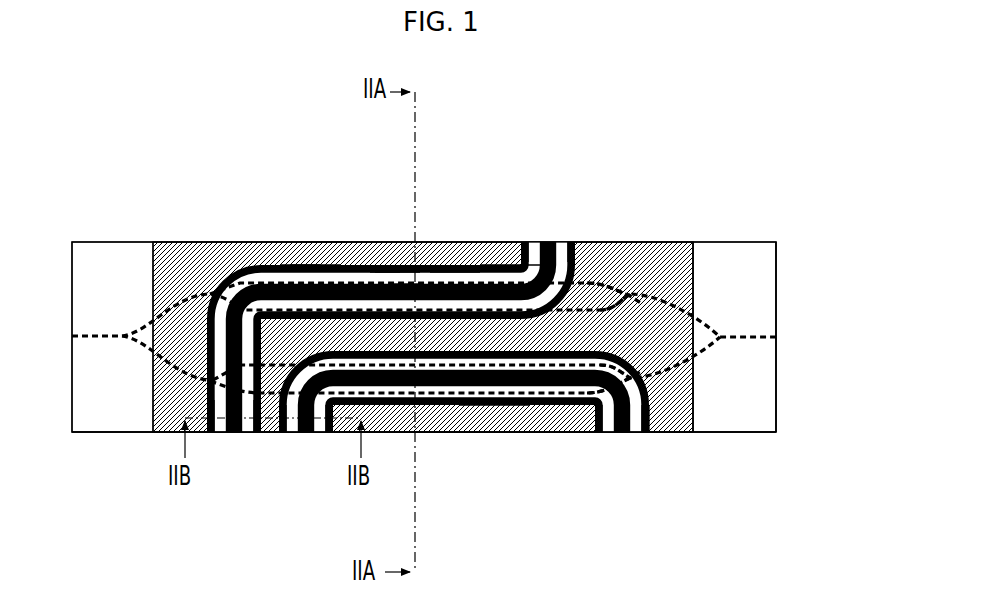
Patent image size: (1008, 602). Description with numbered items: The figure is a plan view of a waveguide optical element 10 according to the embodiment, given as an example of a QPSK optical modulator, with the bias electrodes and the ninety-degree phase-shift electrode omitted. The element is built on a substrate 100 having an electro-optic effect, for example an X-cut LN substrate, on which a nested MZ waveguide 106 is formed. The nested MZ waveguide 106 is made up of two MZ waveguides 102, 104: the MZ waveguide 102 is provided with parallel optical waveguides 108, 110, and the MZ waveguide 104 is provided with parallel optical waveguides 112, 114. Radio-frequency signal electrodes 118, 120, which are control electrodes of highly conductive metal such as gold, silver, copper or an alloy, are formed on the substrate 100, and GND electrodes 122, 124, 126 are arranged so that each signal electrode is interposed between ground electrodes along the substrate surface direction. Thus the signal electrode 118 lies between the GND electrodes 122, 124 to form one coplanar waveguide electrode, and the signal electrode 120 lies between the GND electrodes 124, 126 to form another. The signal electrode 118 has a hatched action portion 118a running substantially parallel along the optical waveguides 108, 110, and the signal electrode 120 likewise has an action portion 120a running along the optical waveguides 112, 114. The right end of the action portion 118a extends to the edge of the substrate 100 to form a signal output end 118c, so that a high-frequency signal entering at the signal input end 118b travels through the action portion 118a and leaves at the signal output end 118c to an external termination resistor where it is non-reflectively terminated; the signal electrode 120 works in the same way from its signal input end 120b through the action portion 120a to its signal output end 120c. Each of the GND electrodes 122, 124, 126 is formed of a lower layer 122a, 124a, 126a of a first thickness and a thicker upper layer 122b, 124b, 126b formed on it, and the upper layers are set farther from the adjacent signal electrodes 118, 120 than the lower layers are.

The waveguide optical element 10 is at (150, 146).
The substrate 100 is at (757, 242).
The MZ waveguide 102 is at (655, 305).
The MZ waveguide 104 is at (700, 425).
The nested MZ waveguide 106 is at (747, 339).
The optical waveguide 108 is at (593, 282).
The optical waveguide 110 is at (610, 300).
The optical waveguide 112 is at (565, 400).
The optical waveguide 114 is at (540, 405).
The signal electrode 118 is at (530, 262).
The action portion 118a is at (460, 278).
The signal input end 118b is at (236, 425).
The signal output end 118c is at (555, 265).
The signal electrode 120 is at (610, 415).
The action portion 120a is at (490, 415).
The signal input end 120b is at (303, 425).
The signal output end 120c is at (630, 420).
The GND electrode 122 is at (232, 143).
The lower layer 122a is at (305, 268).
The upper layer 122b is at (323, 250).
The GND electrode 124 is at (527, 543).
The lower layer 124a is at (458, 422).
The upper layer 124b is at (428, 420).
The GND electrode 126 is at (322, 103).
The lower layer 126a is at (387, 278).
The upper layer 126b is at (402, 288).